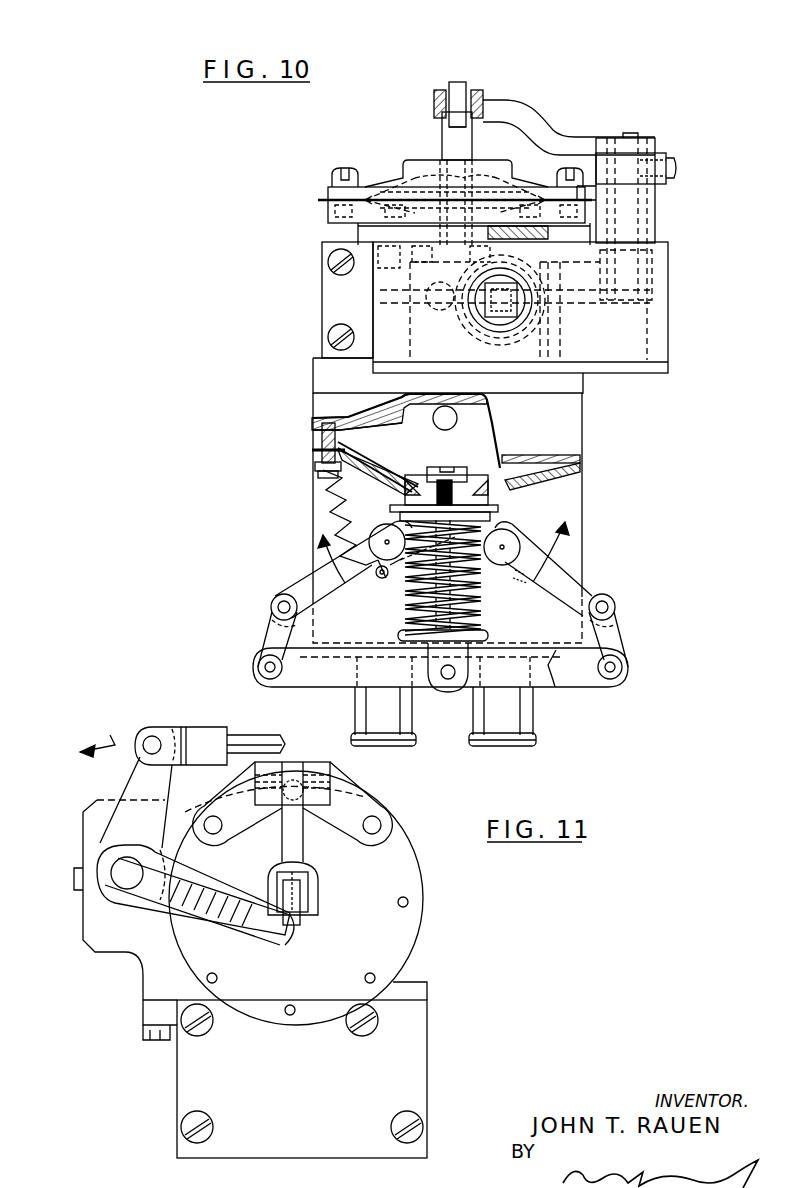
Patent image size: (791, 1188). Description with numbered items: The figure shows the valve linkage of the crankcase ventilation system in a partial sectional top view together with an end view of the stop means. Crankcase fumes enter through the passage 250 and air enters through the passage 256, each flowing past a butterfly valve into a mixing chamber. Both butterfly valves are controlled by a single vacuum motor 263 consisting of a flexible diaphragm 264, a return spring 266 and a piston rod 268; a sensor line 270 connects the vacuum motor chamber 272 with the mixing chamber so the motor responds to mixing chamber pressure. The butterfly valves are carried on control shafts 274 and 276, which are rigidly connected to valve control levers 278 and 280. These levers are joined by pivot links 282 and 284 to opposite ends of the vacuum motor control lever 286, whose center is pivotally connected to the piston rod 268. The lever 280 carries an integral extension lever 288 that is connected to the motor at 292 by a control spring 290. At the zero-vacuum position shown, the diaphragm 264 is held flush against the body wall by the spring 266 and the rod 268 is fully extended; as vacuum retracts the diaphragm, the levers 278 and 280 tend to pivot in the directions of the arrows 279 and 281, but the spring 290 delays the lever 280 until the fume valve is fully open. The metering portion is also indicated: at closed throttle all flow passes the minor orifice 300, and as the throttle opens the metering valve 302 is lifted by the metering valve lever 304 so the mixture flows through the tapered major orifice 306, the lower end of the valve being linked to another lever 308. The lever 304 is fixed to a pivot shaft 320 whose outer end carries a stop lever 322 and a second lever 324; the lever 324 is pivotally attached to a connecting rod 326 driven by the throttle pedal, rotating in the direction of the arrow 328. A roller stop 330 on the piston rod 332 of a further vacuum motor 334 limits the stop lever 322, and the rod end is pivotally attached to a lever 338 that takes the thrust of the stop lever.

In FIG. 10, the crankcase fume passage 250 is at (392, 746).
In FIG. 10, the air passage 256 is at (508, 746).
In FIG. 10, the vacuum motor 263 is at (546, 490).
In FIG. 10, the flexible diaphragm 264 is at (385, 478).
In FIG. 10, the return spring 266 is at (484, 605).
In FIG. 10, the piston rod 268 is at (488, 632).
In FIG. 10, the sensor line 270 is at (458, 416).
In FIG. 10, the vacuum motor chamber 272 is at (431, 457).
In FIG. 10, the control shaft 274 is at (385, 538).
In FIG. 10, the control shaft 276 is at (505, 545).
In FIG. 10, the valve control lever 278 is at (348, 585).
In FIG. 10, the arrow 279 is at (330, 545).
In FIG. 10, the valve control lever 280 is at (590, 585).
In FIG. 10, the arrow 281 is at (570, 545).
In FIG. 10, the pivot link 282 is at (268, 624).
In FIG. 10, the pivot link 284 is at (618, 628).
In FIG. 10, the vacuum motor control lever 286 is at (336, 682).
In FIG. 10, the extension lever 288 is at (400, 578).
In FIG. 10, the control spring 290 is at (345, 513).
In FIG. 10, the spring connection point 292 is at (316, 470).
In FIG. 10, the minor orifice 300 is at (481, 302).
In FIG. 10, the metering valve 302 is at (493, 314).
In FIG. 10, the metering valve lever 304 is at (570, 318).
In FIG. 10, the major orifice 306 is at (528, 328).
In FIG. 10, the lever 308 is at (410, 303).
In FIG. 10, the pivot shaft 320 is at (625, 232).
In FIG. 11, the pivot shaft 320 is at (122, 872).
In FIG. 10, the stop lever 322 is at (548, 133).
In FIG. 11, the stop lever 322 is at (238, 868).
In FIG. 11, the second lever 324 is at (160, 808).
In FIG. 11, the connecting rod 326 is at (262, 740).
In FIG. 11, the arrow 328 is at (94, 730).
In FIG. 10, the roller stop 330 is at (462, 82).
In FIG. 11, the roller stop 330 is at (298, 928).
In FIG. 10, the piston rod 332 is at (455, 138).
In FIG. 11, the piston rod 332 is at (308, 908).
In FIG. 10, the vacuum motor 334 is at (385, 168).
In FIG. 10, the lever 338 is at (433, 105).
In FIG. 11, the lever 338 is at (300, 862).